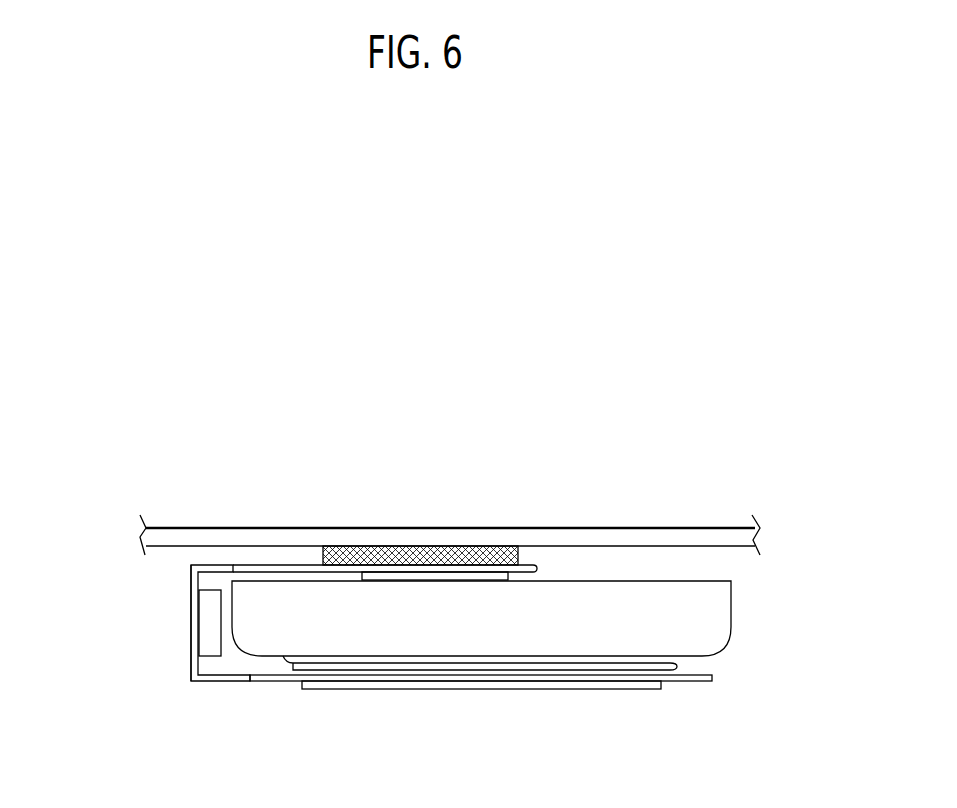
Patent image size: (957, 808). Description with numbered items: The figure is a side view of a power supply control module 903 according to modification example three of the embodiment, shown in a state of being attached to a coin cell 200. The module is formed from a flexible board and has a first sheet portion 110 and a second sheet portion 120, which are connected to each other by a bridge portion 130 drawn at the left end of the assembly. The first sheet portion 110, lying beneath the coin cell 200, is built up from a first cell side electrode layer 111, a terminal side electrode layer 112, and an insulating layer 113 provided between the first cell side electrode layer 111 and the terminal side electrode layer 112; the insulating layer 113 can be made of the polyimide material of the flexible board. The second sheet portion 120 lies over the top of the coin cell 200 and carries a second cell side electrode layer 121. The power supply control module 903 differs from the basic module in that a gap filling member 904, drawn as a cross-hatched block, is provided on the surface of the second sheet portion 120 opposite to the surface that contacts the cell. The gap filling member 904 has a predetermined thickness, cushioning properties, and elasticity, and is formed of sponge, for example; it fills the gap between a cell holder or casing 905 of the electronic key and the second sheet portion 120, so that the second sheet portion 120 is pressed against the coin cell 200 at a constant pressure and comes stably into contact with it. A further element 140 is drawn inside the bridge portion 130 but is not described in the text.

The first sheet portion 110 is at (572, 694).
The first cell side electrode layer 111 is at (680, 667).
The terminal side electrode layer 112 is at (561, 725).
The insulating layer 113 is at (715, 677).
The second sheet portion 120 is at (540, 570).
The second cell side electrode layer 121 is at (455, 577).
The bridge portion 130 is at (192, 648).
The elastic member 140 is at (210, 645).
The coin cell 200 is at (492, 638).
The power supply control module 903 is at (192, 602).
The gap filling member 904 is at (435, 550).
The casing 905 is at (595, 535).